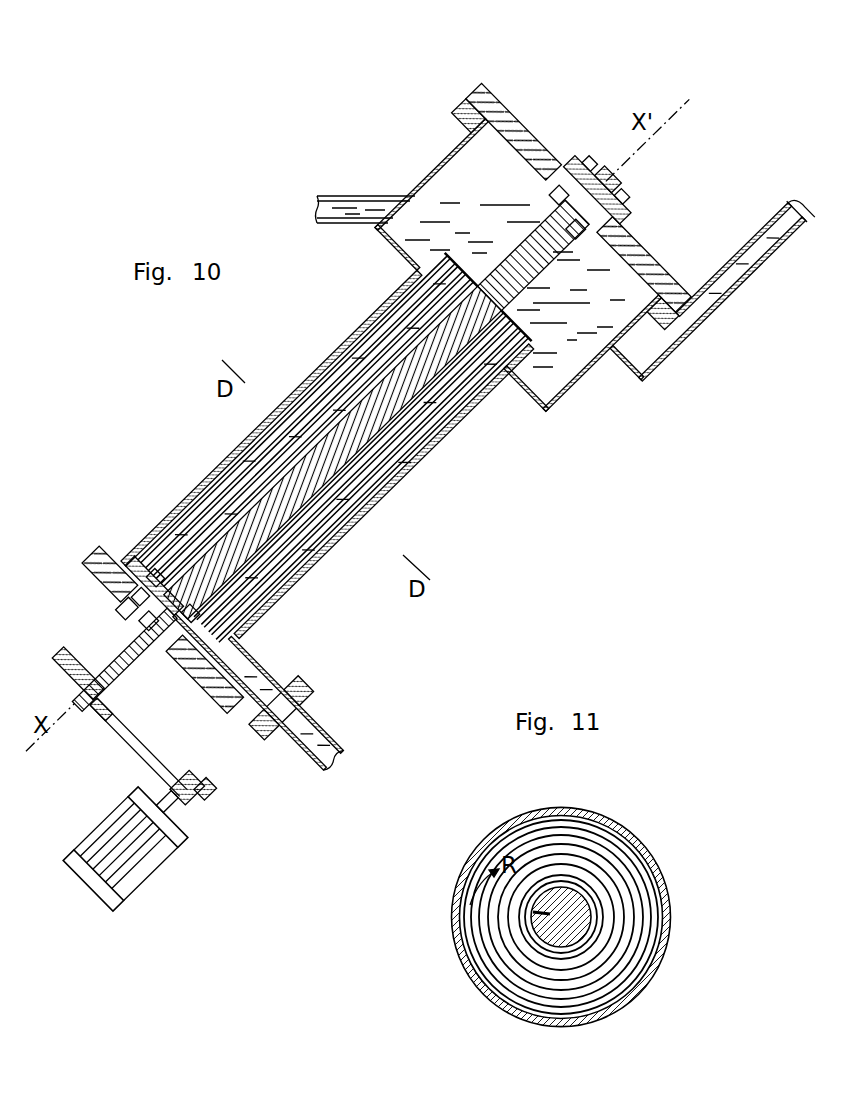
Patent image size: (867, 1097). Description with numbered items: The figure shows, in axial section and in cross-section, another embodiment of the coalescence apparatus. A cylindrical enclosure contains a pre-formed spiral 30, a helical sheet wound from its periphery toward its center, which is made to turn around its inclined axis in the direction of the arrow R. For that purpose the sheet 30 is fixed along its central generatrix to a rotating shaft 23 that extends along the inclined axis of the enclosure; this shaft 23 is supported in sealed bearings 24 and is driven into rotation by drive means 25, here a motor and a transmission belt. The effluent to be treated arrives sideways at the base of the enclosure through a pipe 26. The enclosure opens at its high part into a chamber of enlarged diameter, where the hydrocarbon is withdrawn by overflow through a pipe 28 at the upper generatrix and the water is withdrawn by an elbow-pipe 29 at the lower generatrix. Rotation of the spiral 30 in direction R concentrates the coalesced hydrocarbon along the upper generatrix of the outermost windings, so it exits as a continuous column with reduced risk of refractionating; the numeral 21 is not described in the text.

In FIG. 10, the liquid vessel / header chamber 21 is at (443, 253).
In FIG. 10, the rotating shaft 23 is at (368, 438).
In FIG. 11, the rotating shaft 23 is at (565, 907).
In FIG. 10, the sealed bearing 24 is at (153, 592).
In FIG. 10, the drive means 25 is at (130, 761).
In FIG. 10, the pipe 26 is at (258, 670).
In FIG. 10, the pipe 28 is at (365, 202).
In FIG. 10, the elbow-pipe 29 is at (657, 367).
In FIG. 10, the pre-formed spiral 30 is at (343, 342).
In FIG. 11, the pre-formed spiral 30 is at (672, 933).